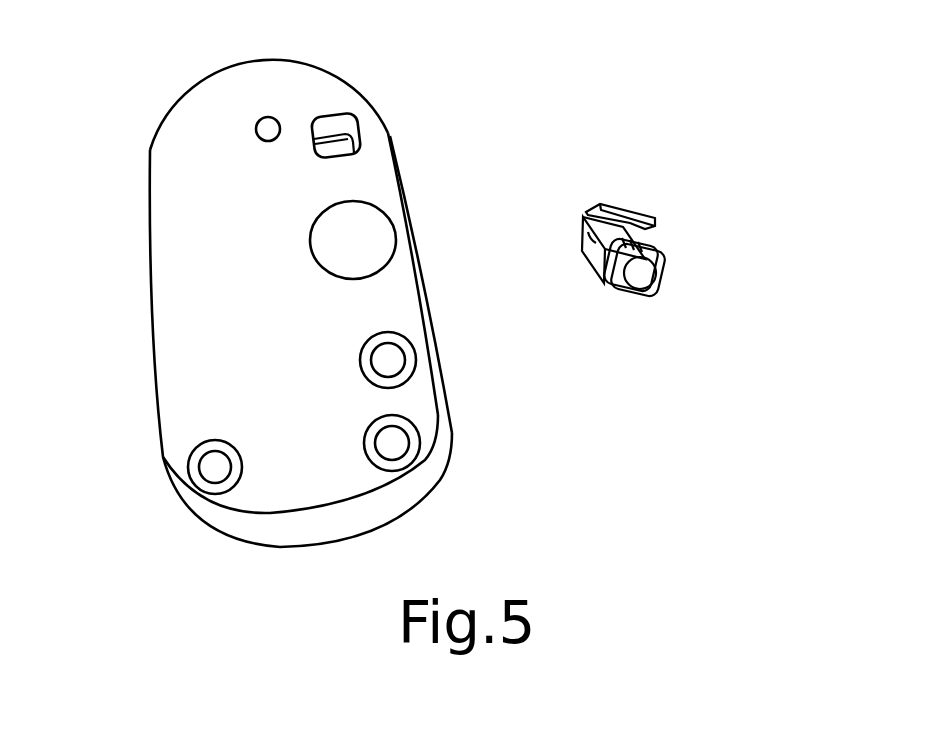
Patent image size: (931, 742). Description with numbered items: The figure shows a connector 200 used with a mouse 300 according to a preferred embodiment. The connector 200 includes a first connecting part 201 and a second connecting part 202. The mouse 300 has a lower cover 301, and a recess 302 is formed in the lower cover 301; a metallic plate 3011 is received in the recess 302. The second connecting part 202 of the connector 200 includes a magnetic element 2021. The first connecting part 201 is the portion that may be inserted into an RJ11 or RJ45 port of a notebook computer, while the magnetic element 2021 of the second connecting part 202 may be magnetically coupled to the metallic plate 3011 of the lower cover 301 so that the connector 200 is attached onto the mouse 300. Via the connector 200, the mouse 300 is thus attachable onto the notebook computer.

The connector 200 is at (627, 180).
The first connecting part 201 is at (582, 223).
The second connecting part 202 is at (657, 257).
The magnetic element 2021 is at (638, 277).
The mouse 300 is at (308, 480).
The lower cover 301 is at (178, 177).
The recess 302 is at (327, 122).
The metallic plate 3011 is at (332, 147).